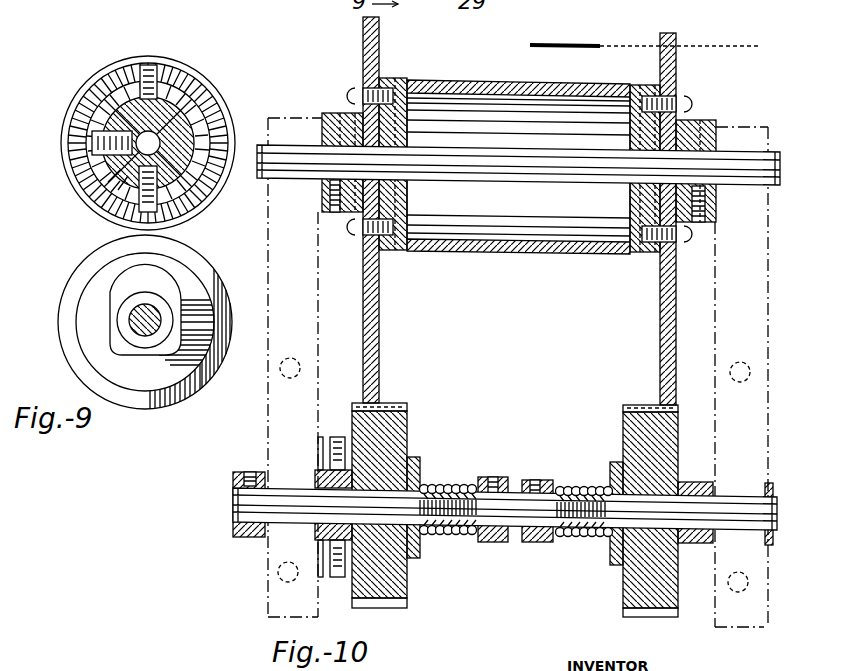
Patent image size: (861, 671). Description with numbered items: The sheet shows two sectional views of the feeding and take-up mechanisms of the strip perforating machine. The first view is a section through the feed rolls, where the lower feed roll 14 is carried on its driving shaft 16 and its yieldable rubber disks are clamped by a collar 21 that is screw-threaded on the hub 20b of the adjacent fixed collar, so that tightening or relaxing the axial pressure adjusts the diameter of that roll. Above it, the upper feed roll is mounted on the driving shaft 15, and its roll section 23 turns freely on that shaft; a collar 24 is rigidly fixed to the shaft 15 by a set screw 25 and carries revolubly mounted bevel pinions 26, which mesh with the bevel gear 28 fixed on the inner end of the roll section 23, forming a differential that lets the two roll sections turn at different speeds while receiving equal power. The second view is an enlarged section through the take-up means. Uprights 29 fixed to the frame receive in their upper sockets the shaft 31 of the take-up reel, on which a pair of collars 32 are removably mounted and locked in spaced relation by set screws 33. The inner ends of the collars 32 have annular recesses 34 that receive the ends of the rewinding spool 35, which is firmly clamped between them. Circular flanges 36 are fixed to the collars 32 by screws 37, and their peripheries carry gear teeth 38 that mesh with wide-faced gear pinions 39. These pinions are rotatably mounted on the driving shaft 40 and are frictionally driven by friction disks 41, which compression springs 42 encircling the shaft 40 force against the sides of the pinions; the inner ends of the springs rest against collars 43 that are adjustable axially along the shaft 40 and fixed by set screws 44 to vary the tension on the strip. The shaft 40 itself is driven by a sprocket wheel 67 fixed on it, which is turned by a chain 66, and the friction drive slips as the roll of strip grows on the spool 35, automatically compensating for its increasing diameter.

In FIG. 9, the lower feed roll 14 is at (58, 321).
In FIG. 9, the driving shaft 15 is at (106, 176).
In FIG. 9, the driving shaft 16 is at (132, 326).
In FIG. 9, the hub 20b is at (136, 343).
In FIG. 9, the collar 21 is at (98, 282).
In FIG. 9, the roll section 23 is at (66, 118).
In FIG. 9, the collar 24 is at (98, 91).
In FIG. 9, the set screw 25 is at (91, 146).
In FIG. 9, the bevel pinion 26 is at (163, 78).
In FIG. 9, the bevel gear 28 is at (194, 113).
In FIG. 10, the upright 29 is at (268, 245).
In FIG. 10, the shaft 31 is at (733, 157).
In FIG. 10, the collar 32 is at (394, 84).
In FIG. 10, the set screw 33 is at (328, 212).
In FIG. 10, the annular recess 34 is at (400, 250).
In FIG. 10, the rewinding spool 35 is at (500, 90).
In FIG. 10, the flange 36 is at (379, 338).
In FIG. 10, the screw 37 is at (350, 95).
In FIG. 10, the gear teeth 38 is at (378, 405).
In FIG. 10, the gear pinion 39 is at (408, 430).
In FIG. 10, the driving shaft 40 is at (515, 536).
In FIG. 10, the friction disk 41 is at (418, 552).
In FIG. 10, the compression spring 42 is at (447, 485).
In FIG. 10, the collar 43 is at (486, 541).
In FIG. 10, the set screw 44 is at (493, 478).
In FIG. 10, the chain 66 is at (319, 438).
In FIG. 10, the sprocket wheel 67 is at (336, 578).